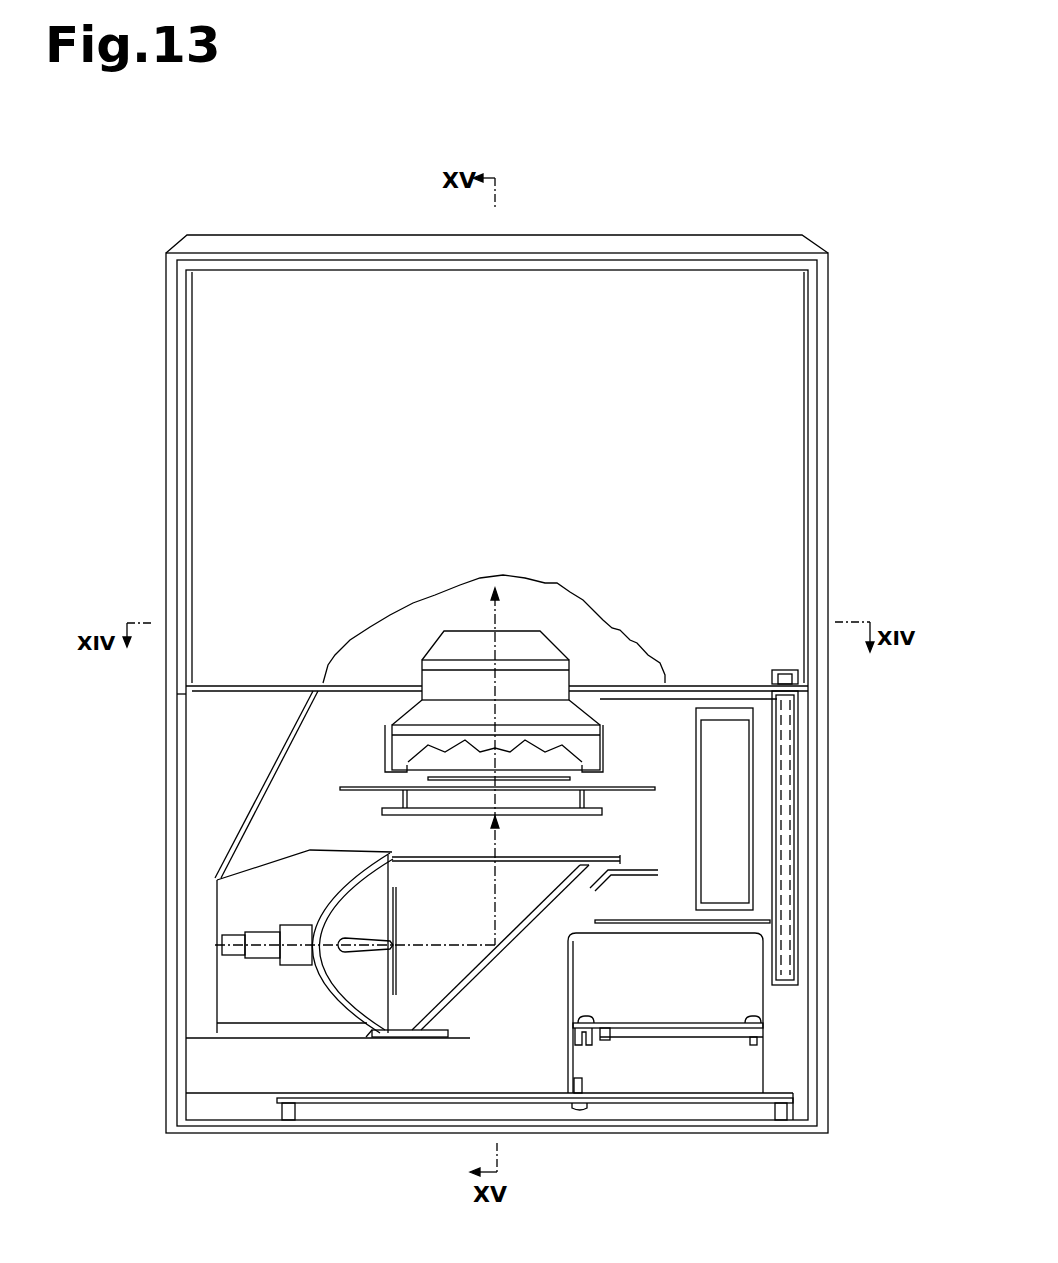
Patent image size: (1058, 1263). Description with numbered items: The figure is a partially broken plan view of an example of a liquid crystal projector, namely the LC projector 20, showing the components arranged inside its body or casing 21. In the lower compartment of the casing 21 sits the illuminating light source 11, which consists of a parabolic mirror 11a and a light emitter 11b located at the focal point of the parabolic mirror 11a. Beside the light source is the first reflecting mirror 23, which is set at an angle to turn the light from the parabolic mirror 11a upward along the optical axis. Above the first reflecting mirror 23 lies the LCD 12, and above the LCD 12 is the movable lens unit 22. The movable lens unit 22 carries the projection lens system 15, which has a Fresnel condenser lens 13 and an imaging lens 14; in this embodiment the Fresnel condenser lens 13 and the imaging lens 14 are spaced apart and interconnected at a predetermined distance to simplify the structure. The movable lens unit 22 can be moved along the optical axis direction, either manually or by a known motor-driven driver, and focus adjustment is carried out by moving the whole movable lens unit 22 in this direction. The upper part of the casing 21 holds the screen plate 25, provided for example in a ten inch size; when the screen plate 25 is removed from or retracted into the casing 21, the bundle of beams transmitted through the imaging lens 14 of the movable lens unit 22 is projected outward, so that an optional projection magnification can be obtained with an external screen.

The LC projector 20 is at (567, 228).
The body (casing) 21 is at (177, 415).
The screen plate 25 is at (210, 348).
The movable lens unit 22 is at (400, 696).
The imaging lens 14 is at (575, 660).
The projection lens system 15 is at (670, 733).
The Fresnel condenser lens 13 is at (545, 762).
The LCD 12 is at (575, 797).
The illuminating light source 11 is at (312, 989).
The parabolic mirror 11a is at (345, 997).
The light emitter 11b is at (365, 940).
The first reflecting mirror 23 is at (475, 975).